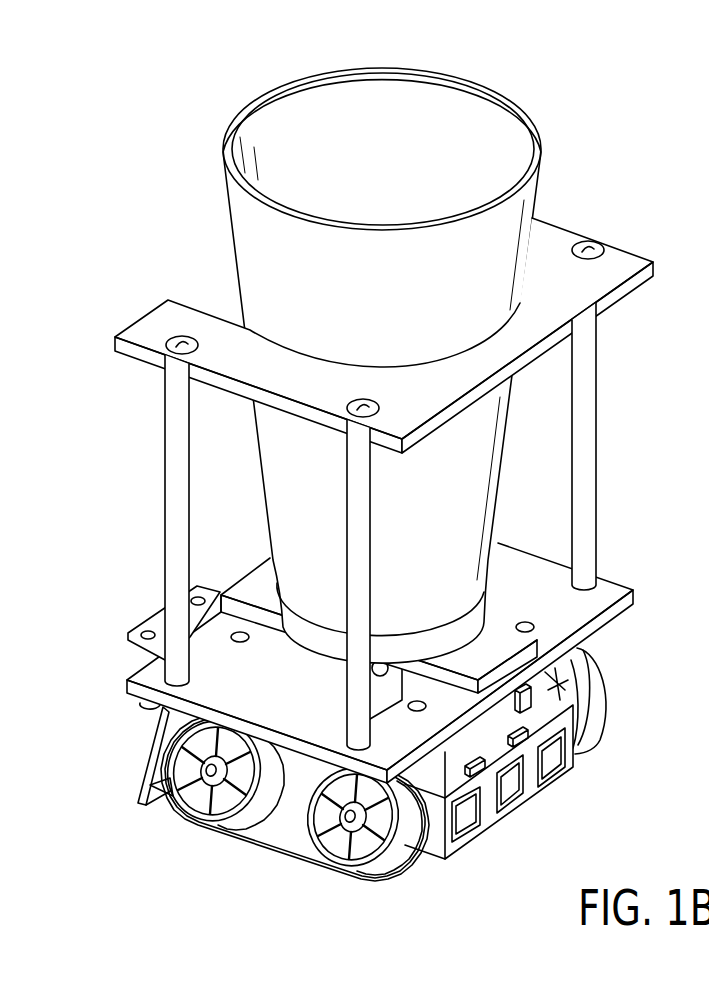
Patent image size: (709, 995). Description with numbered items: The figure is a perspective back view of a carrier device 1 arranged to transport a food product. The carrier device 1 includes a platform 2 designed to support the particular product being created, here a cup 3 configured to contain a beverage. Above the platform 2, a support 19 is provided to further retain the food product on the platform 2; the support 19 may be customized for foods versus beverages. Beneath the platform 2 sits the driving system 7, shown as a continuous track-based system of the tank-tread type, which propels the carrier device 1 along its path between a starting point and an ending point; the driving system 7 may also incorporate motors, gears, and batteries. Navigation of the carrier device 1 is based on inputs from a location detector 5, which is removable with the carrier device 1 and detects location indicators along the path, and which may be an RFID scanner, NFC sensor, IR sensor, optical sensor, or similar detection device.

The carrier device 1 is at (497, 827).
The platform 2 is at (527, 577).
The cup 3 is at (272, 92).
The location detector 5 is at (145, 614).
The driving system 7 is at (167, 795).
The support 19 is at (143, 318).